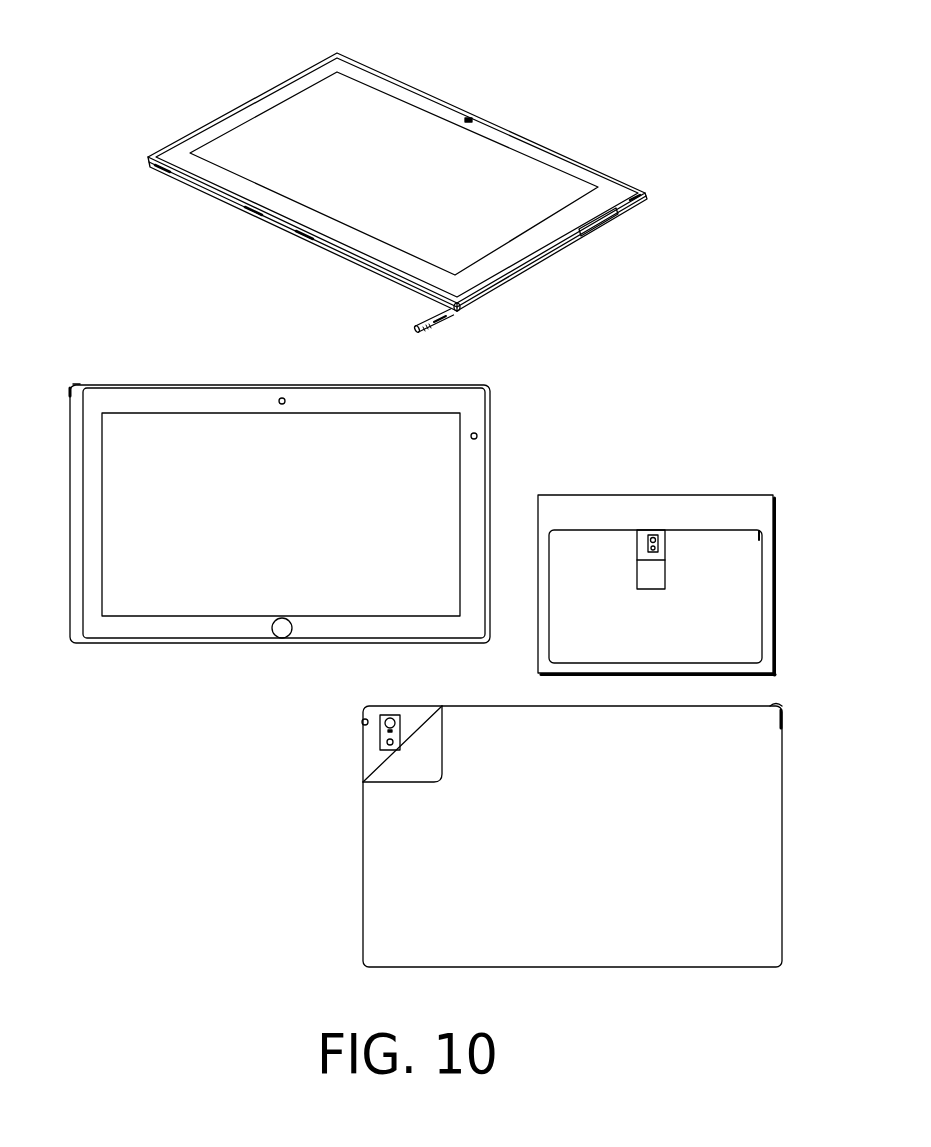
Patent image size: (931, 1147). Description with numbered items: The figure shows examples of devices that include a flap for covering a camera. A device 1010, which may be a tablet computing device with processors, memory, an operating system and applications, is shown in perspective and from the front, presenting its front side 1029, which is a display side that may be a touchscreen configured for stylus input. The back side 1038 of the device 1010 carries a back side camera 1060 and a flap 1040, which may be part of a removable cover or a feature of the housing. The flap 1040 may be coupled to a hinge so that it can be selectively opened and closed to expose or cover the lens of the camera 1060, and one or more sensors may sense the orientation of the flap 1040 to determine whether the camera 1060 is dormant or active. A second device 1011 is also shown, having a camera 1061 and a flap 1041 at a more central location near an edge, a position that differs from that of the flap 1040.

The device 1010 is at (551, 83).
The front side 1029 is at (421, 188).
The device 1011 is at (656, 585).
The flap 1041 is at (637, 573).
The camera 1061 is at (643, 527).
The back side 1038 is at (602, 843).
The flap 1040 is at (430, 778).
The back side camera 1060 is at (360, 709).